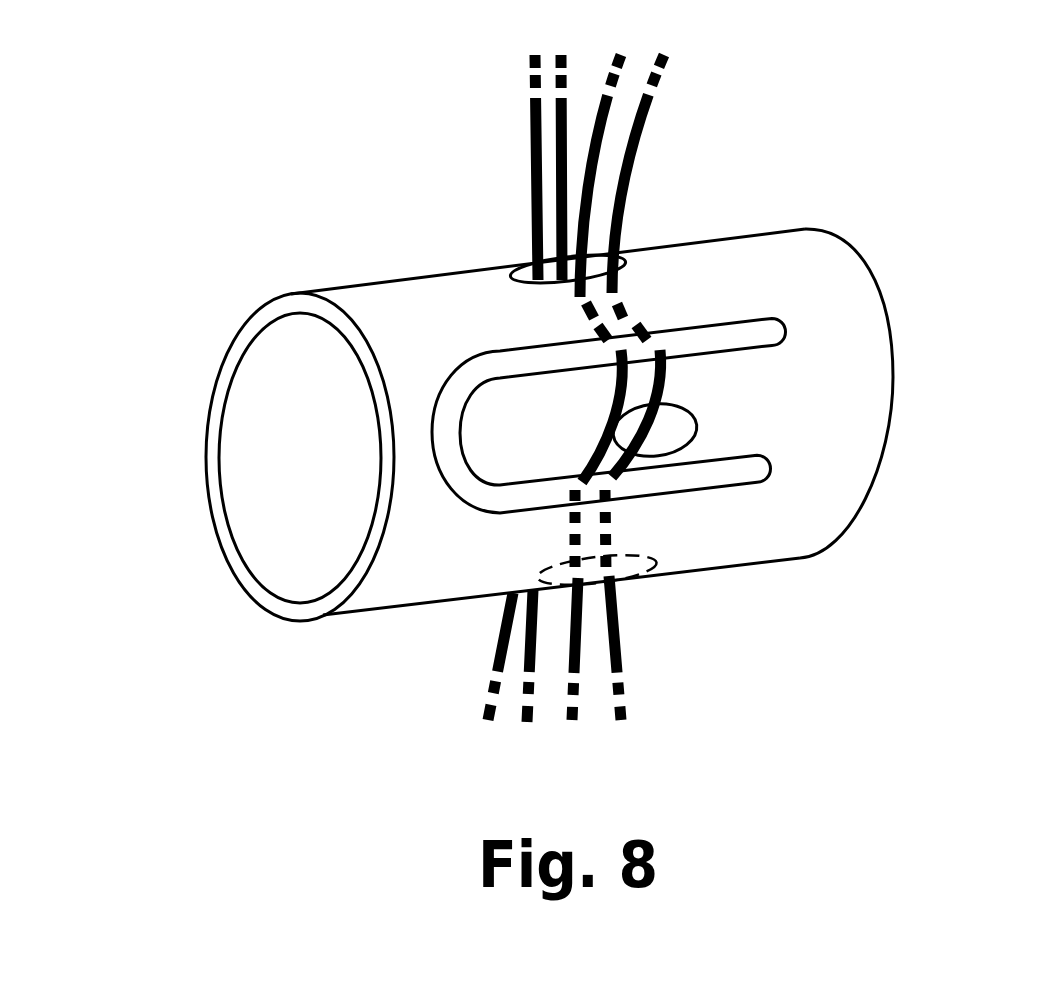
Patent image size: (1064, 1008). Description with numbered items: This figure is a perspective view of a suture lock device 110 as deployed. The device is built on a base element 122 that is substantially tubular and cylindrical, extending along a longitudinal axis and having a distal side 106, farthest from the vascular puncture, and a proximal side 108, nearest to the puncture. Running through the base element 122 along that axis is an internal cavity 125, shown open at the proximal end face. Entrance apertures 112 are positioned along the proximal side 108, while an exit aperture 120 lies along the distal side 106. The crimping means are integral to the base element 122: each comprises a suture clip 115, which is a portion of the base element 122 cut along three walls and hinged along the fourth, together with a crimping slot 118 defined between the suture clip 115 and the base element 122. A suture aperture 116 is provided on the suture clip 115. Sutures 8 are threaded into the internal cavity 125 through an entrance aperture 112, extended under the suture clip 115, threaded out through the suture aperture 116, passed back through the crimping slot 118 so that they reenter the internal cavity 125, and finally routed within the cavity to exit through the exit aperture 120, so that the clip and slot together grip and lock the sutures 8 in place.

The sutures 8 is at (656, 80).
The distal side 106 is at (425, 608).
The proximal side 108 is at (325, 289).
The suture lock device 110 is at (579, 443).
The entrance apertures 112 is at (637, 590).
The suture clip 115 is at (507, 438).
The suture aperture 116 is at (690, 413).
The crimping slot 118 is at (518, 260).
The exit aperture 120 is at (272, 467).
The base element 122 is at (418, 313).
The internal cavity 125 is at (292, 527).